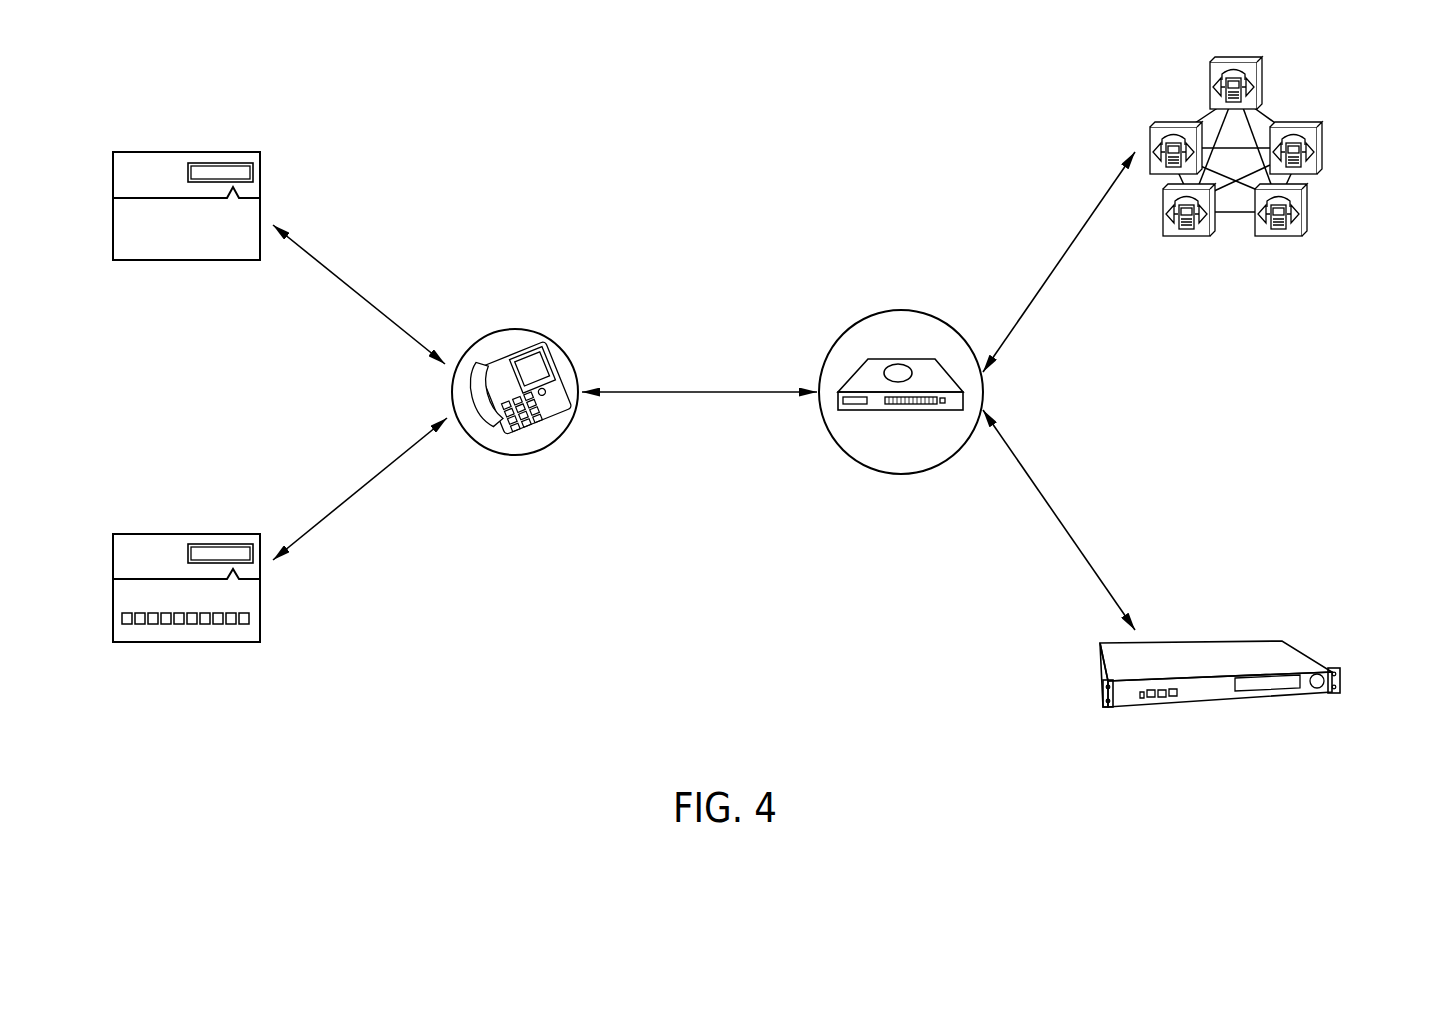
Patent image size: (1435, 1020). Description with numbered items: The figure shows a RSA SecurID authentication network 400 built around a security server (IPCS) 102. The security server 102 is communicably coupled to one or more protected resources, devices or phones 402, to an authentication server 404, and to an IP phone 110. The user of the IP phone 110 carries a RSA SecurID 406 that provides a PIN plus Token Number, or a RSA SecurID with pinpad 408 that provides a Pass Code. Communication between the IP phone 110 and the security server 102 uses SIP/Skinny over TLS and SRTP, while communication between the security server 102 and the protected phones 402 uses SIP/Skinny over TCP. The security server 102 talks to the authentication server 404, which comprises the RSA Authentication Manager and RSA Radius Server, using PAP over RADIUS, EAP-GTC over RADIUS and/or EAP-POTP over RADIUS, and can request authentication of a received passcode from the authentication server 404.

The RSA SecurID authentication network 400 is at (637, 122).
The security server (IPCS) 102 is at (893, 310).
The IP phone 110 is at (510, 329).
The protected resources, devices or phones 402 is at (1323, 137).
The authentication server 404 is at (1340, 676).
The RSA SecurID 406 is at (151, 152).
The RSA SecurID with pinpad 408 is at (143, 534).